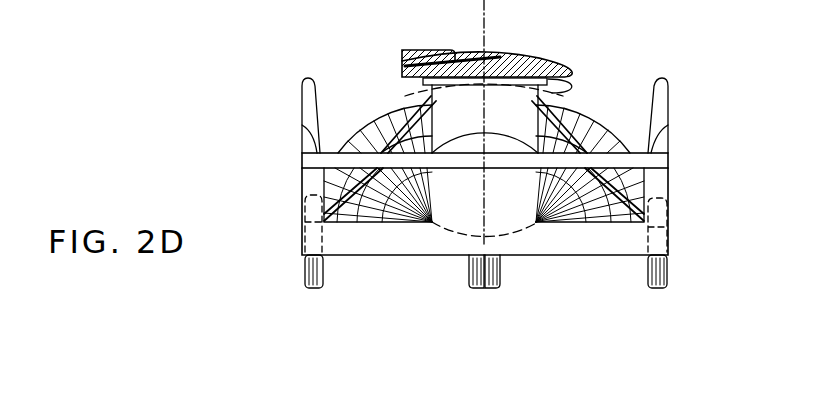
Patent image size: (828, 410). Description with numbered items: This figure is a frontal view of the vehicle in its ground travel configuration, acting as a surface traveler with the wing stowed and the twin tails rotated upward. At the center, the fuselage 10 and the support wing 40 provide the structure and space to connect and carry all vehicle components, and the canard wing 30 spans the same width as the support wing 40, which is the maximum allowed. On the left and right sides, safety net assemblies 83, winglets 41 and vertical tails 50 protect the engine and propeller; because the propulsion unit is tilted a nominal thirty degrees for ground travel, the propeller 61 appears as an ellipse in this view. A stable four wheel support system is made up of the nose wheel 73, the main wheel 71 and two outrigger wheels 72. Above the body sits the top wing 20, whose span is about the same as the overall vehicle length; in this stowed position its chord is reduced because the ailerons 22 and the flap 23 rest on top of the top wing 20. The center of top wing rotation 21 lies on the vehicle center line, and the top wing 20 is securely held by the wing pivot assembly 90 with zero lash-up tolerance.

The fuselage 10 is at (481, 123).
The top wing 20 is at (527, 62).
The center of top wing rotation 21 is at (487, 51).
The ailerons 22 is at (418, 51).
The flap 23 is at (428, 55).
The canard wing 30 is at (302, 160).
The support wing 40 is at (622, 238).
The winglets 41 is at (658, 186).
The vertical tails 50 is at (664, 108).
The propeller 61 is at (427, 95).
The main wheel 71 is at (472, 267).
The outrigger wheels 72 is at (304, 270).
The nose wheel 73 is at (490, 287).
The safety net assemblies 83 is at (542, 195).
The wing pivot assembly 90 is at (571, 89).